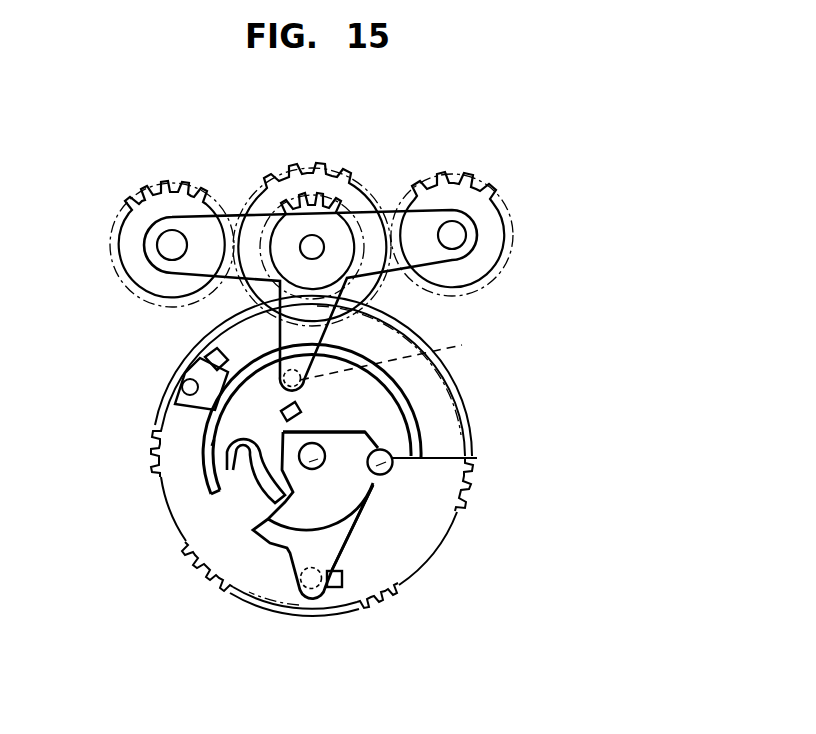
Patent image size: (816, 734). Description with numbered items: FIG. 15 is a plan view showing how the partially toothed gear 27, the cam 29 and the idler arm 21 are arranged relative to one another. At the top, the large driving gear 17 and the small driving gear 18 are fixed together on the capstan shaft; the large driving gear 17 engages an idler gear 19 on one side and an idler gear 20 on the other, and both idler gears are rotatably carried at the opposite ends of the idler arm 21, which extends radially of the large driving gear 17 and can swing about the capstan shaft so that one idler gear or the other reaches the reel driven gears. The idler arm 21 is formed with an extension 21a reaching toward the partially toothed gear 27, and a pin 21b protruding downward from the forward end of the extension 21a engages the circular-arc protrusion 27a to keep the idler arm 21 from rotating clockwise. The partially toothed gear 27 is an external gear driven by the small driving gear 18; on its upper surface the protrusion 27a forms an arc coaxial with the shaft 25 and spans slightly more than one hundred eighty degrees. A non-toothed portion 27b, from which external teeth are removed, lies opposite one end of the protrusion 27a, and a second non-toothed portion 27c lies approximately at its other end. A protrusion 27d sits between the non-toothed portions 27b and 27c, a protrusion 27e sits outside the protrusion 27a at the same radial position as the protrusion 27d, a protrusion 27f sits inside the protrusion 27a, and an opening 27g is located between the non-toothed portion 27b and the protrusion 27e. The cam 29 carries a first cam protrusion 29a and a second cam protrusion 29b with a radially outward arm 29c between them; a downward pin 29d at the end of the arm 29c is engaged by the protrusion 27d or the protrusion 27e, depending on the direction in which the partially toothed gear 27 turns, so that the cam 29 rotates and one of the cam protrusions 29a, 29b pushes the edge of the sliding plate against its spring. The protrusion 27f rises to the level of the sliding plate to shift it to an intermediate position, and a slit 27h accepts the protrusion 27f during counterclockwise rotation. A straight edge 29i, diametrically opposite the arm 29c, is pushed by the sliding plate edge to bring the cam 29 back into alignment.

The large driving gear 17 is at (283, 175).
The small driving gear 18 is at (320, 198).
The idler gear 19 is at (142, 193).
The idler gear 20 is at (445, 172).
The idler arm 21 is at (374, 232).
The extension 21a is at (305, 345).
The pin 21b is at (412, 358).
The shaft 25 is at (318, 465).
The partially toothed gear 27 is at (262, 575).
The protrusion 27a is at (206, 490).
The non-toothed portion 27b is at (157, 478).
The second non-toothed portion 27c is at (396, 583).
The protrusion 27d is at (336, 586).
The protrusion 27e is at (210, 350).
The protrusion 27f is at (227, 373).
The opening 27g is at (181, 379).
The slit 27h is at (208, 445).
The cam 29 is at (320, 500).
The first cam protrusion 29a is at (240, 475).
The second cam protrusion 29b is at (393, 461).
The arm 29c is at (322, 545).
The pin 29d is at (296, 596).
The straight edge 29i is at (366, 433).